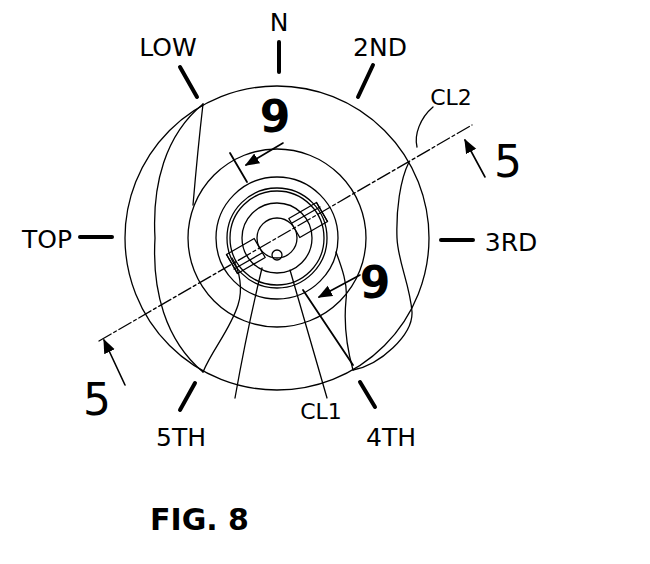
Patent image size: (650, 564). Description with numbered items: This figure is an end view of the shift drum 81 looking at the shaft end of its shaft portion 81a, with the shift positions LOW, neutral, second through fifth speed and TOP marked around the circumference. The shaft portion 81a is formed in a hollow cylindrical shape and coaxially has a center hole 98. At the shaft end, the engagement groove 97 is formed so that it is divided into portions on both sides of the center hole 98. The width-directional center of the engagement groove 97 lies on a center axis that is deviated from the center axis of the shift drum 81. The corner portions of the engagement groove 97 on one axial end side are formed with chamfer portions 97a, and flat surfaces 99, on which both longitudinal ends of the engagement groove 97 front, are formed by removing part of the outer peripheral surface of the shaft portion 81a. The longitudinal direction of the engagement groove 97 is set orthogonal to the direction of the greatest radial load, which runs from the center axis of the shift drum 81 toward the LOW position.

The shift drum 81 is at (388, 137).
The shaft portion 81a is at (200, 157).
The engagement groove 97 is at (313, 212).
The chamfer portions 97a is at (289, 198).
The center hole 98 is at (280, 262).
The flat surfaces 99 is at (217, 255).